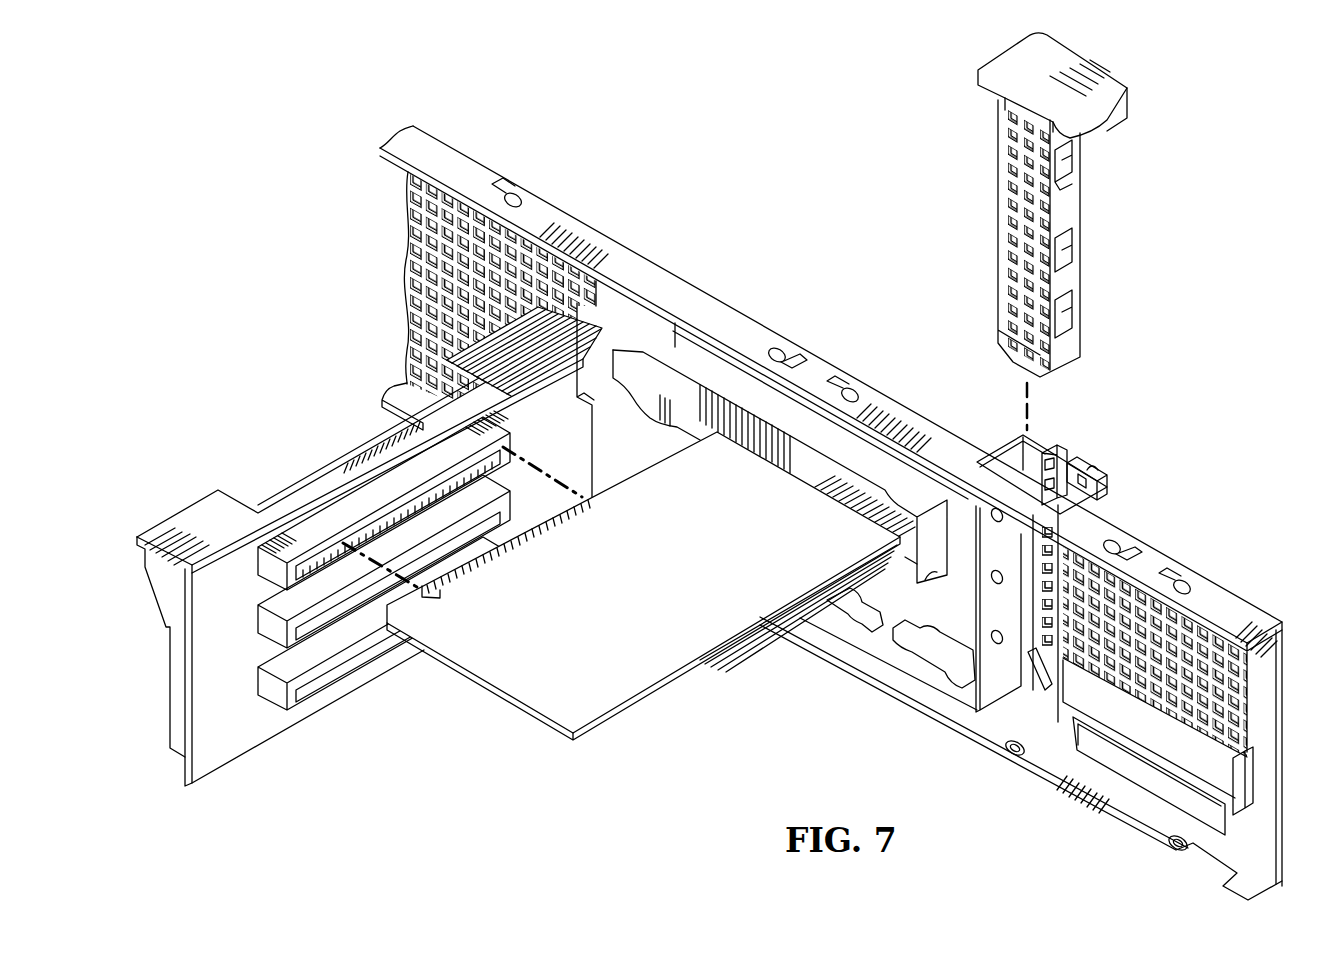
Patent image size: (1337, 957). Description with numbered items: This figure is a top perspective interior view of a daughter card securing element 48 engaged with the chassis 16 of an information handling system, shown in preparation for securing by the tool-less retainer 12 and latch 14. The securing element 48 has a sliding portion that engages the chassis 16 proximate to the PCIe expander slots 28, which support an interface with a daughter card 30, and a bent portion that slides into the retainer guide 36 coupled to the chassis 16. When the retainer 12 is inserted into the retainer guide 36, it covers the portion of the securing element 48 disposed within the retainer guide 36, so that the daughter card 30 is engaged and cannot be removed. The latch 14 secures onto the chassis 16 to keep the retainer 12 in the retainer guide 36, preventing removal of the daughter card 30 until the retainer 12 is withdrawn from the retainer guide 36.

The tool-less daughter card retainer 12 is at (993, 178).
The latch 14 is at (1097, 88).
The chassis 16 is at (1157, 568).
The PCIe bus slots 28 is at (265, 565).
The daughter card 30 is at (513, 683).
The retainer guide 36 is at (1003, 678).
The daughter card securing element 48 is at (820, 478).